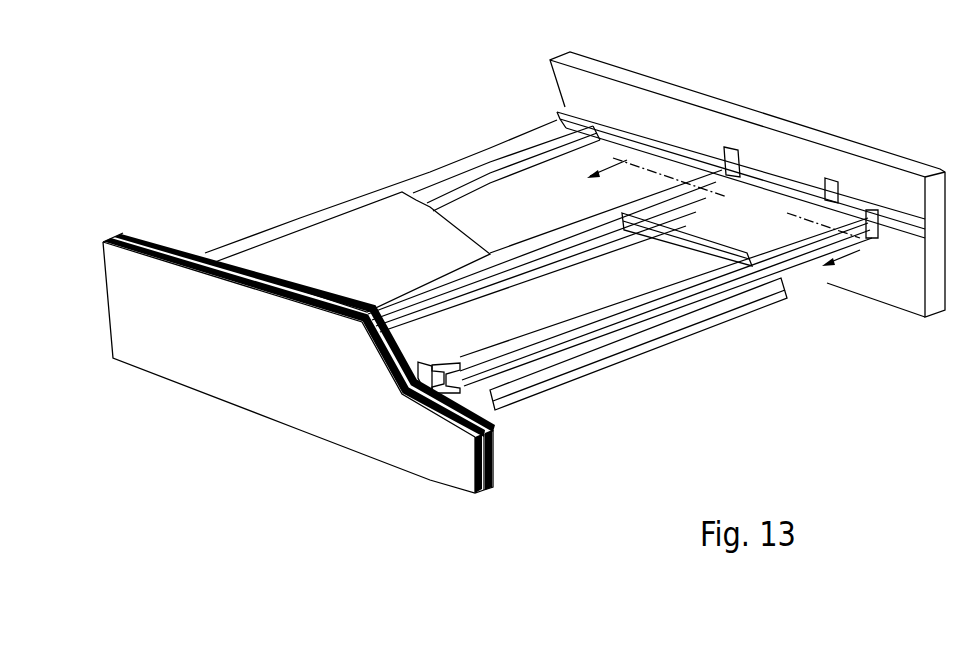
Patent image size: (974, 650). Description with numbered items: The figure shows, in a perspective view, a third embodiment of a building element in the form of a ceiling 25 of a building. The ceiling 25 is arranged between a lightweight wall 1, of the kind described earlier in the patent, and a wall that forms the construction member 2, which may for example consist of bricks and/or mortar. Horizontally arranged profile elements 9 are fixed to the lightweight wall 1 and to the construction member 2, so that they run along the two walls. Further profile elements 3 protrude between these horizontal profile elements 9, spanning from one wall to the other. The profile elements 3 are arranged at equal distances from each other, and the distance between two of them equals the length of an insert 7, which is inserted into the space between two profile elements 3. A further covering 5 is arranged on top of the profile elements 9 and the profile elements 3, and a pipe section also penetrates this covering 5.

The lightweight wall 1 is at (289, 356).
The construction member 2 is at (735, 176).
The profile elements 3 is at (457, 170).
The covering 5 is at (501, 301).
The insert 7 is at (830, 185).
The profile elements 9 is at (628, 275).
The ceiling 25 is at (376, 140).